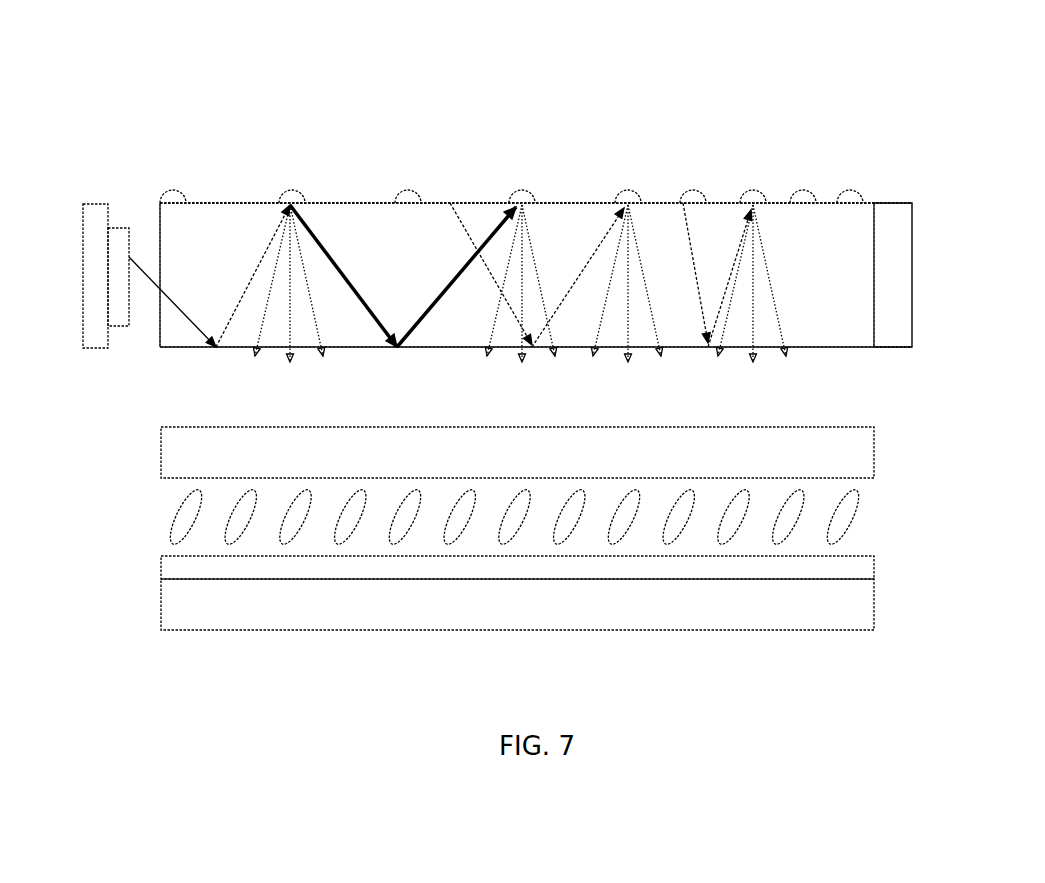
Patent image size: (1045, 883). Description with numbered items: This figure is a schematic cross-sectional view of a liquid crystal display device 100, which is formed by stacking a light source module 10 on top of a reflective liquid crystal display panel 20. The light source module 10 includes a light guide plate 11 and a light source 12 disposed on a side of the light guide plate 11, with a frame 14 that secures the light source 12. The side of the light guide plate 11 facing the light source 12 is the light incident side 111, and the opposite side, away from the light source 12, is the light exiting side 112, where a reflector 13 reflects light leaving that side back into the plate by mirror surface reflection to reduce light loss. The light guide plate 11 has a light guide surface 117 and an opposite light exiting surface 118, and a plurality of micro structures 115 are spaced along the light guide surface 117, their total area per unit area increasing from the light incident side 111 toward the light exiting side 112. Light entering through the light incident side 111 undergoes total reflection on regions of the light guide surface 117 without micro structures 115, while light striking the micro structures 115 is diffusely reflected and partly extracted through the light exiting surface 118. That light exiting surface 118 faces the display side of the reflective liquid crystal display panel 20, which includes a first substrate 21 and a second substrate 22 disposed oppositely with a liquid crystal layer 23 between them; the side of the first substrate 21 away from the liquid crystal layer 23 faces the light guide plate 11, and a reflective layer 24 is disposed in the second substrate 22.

The liquid crystal display device 100 is at (112, 86).
The light source module 10 is at (60, 294).
The light guide plate 11 is at (534, 275).
The light source 12 is at (115, 232).
The reflector 13 is at (890, 220).
The frame 14 is at (95, 210).
The light incident side 111 is at (158, 318).
The light exiting side 112 is at (875, 318).
The micro structures 115 is at (410, 200).
The light guide surface 117 is at (573, 203).
The light exiting surface 118 is at (572, 348).
The reflective liquid crystal display panel 20 is at (142, 512).
The first substrate 21 is at (861, 450).
The second substrate 22 is at (860, 605).
The liquid crystal layer 23 is at (847, 510).
The reflective layer 24 is at (860, 563).